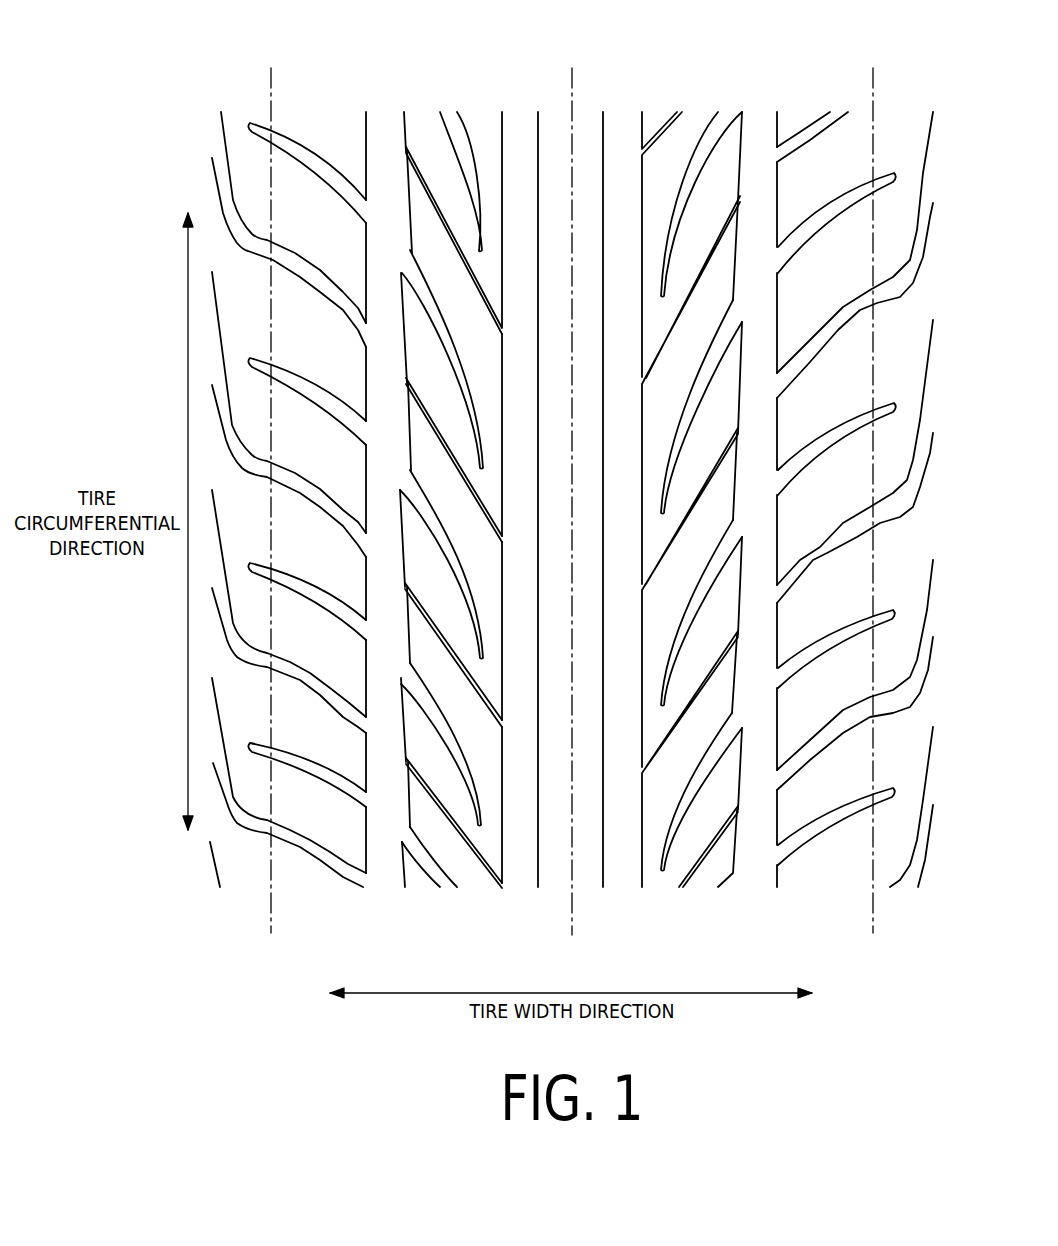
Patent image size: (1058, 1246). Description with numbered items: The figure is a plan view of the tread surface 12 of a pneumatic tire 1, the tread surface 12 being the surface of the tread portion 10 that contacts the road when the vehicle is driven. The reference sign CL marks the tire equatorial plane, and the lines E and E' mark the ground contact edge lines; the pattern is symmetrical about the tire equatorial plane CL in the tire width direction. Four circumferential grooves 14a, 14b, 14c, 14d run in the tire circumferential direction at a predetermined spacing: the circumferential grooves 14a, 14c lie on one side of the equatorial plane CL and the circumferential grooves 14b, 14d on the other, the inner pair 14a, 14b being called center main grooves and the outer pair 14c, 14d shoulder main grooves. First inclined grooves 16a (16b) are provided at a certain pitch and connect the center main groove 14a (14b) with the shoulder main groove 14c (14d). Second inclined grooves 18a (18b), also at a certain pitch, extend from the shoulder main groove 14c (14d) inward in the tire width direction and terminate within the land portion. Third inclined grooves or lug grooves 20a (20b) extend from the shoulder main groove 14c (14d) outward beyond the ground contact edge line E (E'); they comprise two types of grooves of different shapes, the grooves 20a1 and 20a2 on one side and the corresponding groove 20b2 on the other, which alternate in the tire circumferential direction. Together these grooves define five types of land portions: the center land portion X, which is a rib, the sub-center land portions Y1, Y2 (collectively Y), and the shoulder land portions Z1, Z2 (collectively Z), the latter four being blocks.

The pneumatic tire 1 is at (447, 78).
The tread portion 10 is at (502, 78).
The tread surface 12 is at (333, 128).
The circumferential groove (center main groove) 14a is at (522, 873).
The circumferential groove (center main groove) 14b is at (622, 873).
The circumferential groove (shoulder main groove) 14c is at (385, 873).
The circumferential groove (shoulder main groove) 14d is at (753, 873).
The first inclined groove 16a is at (476, 298).
The first inclined groove 16b is at (670, 345).
The second inclined groove 18a is at (445, 348).
The second inclined groove 18b is at (702, 387).
The third inclined groove (lug groove) 20a is at (288, 499).
The third inclined groove of first type 20a1 is at (307, 274).
The third inclined groove of second type 20a2 is at (303, 388).
The third inclined groove (lug groove) 20b is at (855, 499).
The third inclined groove of second type 20b2 is at (842, 322).
The center land portion X is at (567, 505).
The sub-center land portions Y is at (571, 500).
The sub-center land portion Y1 is at (451, 500).
The sub-center land portion Y2 is at (692, 499).
The shoulder land portions Z is at (571, 499).
The shoulder land portion Z1 is at (288, 499).
The shoulder land portion Z2 is at (855, 499).
The ground contact edge line E is at (271, 485).
The ground contact edge line E' is at (879, 485).
The tire equatorial plane CL is at (572, 486).